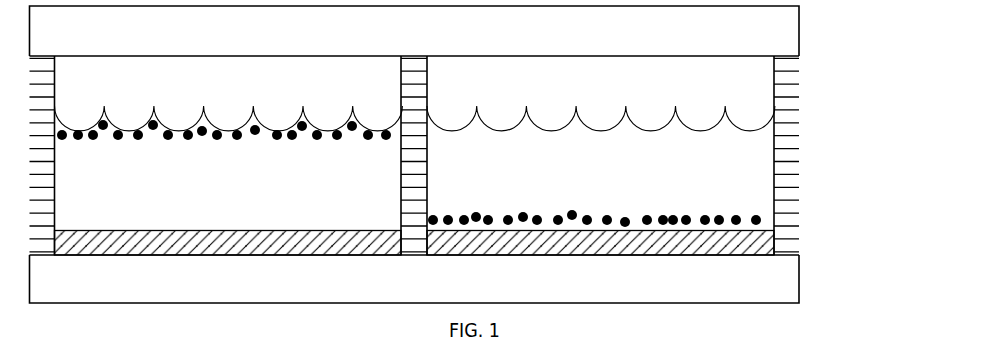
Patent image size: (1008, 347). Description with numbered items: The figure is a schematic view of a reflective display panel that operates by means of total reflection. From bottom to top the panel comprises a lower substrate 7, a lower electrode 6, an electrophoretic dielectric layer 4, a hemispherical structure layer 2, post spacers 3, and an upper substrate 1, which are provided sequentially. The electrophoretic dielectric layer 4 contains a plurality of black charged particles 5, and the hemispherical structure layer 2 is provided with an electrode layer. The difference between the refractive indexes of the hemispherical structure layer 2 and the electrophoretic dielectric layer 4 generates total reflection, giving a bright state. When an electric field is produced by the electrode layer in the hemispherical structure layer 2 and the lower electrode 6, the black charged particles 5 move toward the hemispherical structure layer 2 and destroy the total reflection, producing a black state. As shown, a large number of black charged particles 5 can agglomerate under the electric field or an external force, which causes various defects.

The upper substrate 1 is at (725, 32).
The hemispherical structure layer 2 is at (725, 76).
The post spacers 3 is at (783, 116).
The electrophoretic dielectric layer 4 is at (725, 156).
The black charged particles 5 is at (712, 218).
The lower electrode 6 is at (776, 239).
The lower substrate 7 is at (725, 279).